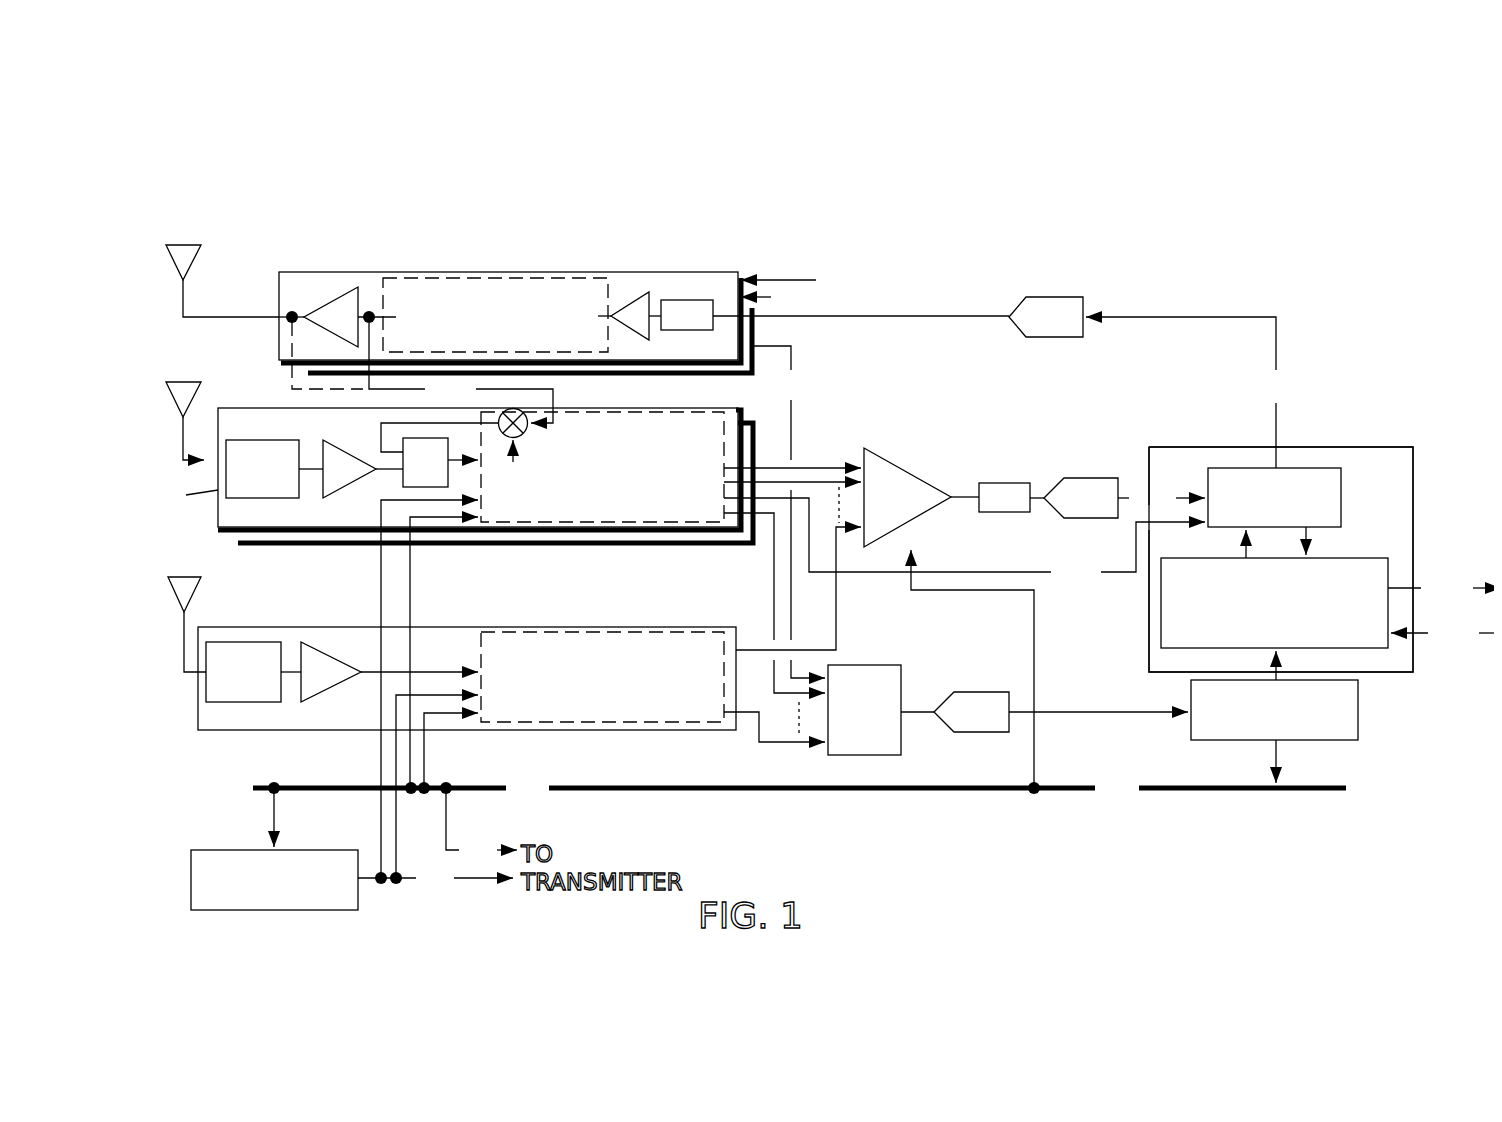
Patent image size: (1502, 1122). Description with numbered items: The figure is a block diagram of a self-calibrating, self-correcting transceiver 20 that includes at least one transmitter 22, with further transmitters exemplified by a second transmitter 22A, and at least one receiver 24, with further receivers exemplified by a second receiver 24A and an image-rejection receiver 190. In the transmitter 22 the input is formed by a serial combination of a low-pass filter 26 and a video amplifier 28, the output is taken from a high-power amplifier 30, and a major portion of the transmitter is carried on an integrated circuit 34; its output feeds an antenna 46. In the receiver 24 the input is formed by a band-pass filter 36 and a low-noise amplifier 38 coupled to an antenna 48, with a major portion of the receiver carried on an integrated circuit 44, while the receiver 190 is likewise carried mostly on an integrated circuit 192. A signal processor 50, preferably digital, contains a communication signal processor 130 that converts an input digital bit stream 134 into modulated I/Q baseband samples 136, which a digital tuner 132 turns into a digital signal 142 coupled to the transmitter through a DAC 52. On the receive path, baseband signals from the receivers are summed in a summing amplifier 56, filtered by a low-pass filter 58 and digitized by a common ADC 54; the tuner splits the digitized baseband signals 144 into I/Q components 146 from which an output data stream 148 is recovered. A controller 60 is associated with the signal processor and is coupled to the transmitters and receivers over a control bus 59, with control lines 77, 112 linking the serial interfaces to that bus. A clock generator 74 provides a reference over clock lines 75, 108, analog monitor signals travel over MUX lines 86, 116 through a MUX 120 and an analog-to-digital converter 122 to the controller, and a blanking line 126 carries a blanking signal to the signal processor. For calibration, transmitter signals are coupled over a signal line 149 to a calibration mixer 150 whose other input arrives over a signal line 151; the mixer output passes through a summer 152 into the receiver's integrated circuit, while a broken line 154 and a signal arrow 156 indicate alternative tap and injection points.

The transceiver 20 is at (1152, 292).
The transmitter 22 is at (283, 270).
The second transmitter 22A is at (516, 341).
The receiver 24 is at (217, 405).
The second receiver 24A is at (483, 499).
The low-pass filter 26 is at (692, 300).
The video amplifier 28 is at (650, 304).
The high-power amplifier (HPA) 30 is at (345, 288).
The integrated circuit 34 is at (495, 293).
The band-pass filter 36 is at (270, 440).
The low-noise amplifier (LNA) 38 is at (352, 455).
The integrated circuit 44 is at (671, 448).
The antenna 46 is at (203, 266).
The antenna 48 is at (168, 398).
The signal processor 50 is at (1338, 444).
The digital-to-analog converter (DAC) 52 is at (1045, 297).
The analog-to-digital converter (ADC) 54 is at (1080, 478).
The summing amplifier 56 is at (910, 472).
The low-pass filter 58 is at (996, 482).
The control bus 59 is at (799, 789).
The controller 60 is at (1357, 718).
The clock generator 74 is at (300, 912).
The clock line 75 is at (586, 589).
The control line 77 is at (654, 567).
The MUX line 86 is at (789, 512).
The clock line 108 is at (417, 689).
The control line 112 is at (436, 652).
The MUX line 116 is at (774, 603).
The MUX 120 is at (875, 665).
The analog-to-digital converter 122 is at (985, 692).
The blanking line 126 is at (964, 543).
The communication signal processor 130 is at (1160, 612).
The digital tuner 132 is at (1232, 468).
The input digital bit stream 134 is at (1442, 635).
The modulated I/Q baseband samples 136 is at (1240, 550).
The digital signal 142 is at (1192, 392).
The digitized baseband signals 144 is at (1161, 498).
The I/Q components 146 is at (1310, 550).
The output data stream 148 is at (1441, 590).
The signal line 149 is at (461, 373).
The calibration mixer 150 is at (522, 433).
The signal line 151 is at (514, 455).
The summer 152 is at (402, 478).
The broken line 154 is at (290, 382).
The signal arrow 156 is at (181, 500).
The receiver 190 is at (222, 735).
The integrated circuit 192 is at (562, 737).